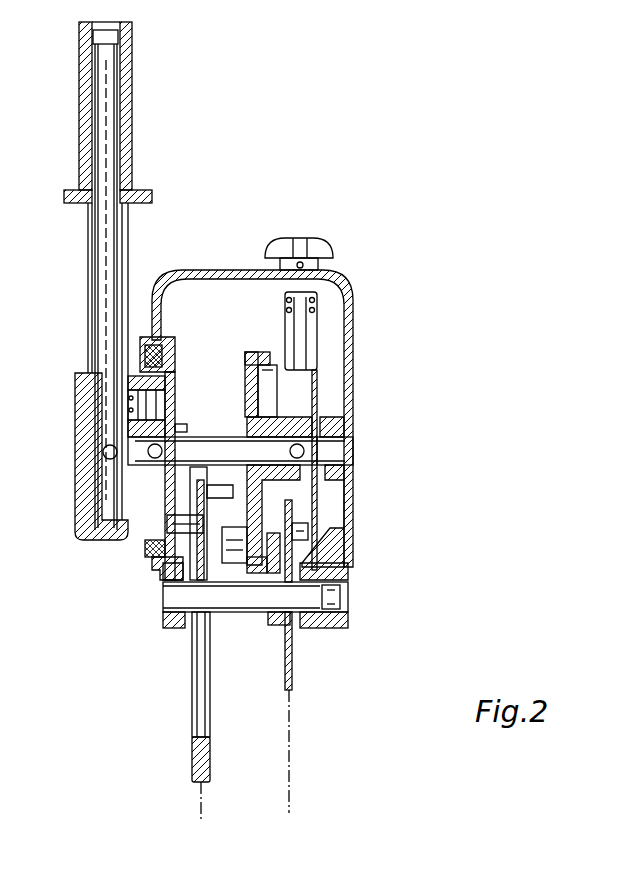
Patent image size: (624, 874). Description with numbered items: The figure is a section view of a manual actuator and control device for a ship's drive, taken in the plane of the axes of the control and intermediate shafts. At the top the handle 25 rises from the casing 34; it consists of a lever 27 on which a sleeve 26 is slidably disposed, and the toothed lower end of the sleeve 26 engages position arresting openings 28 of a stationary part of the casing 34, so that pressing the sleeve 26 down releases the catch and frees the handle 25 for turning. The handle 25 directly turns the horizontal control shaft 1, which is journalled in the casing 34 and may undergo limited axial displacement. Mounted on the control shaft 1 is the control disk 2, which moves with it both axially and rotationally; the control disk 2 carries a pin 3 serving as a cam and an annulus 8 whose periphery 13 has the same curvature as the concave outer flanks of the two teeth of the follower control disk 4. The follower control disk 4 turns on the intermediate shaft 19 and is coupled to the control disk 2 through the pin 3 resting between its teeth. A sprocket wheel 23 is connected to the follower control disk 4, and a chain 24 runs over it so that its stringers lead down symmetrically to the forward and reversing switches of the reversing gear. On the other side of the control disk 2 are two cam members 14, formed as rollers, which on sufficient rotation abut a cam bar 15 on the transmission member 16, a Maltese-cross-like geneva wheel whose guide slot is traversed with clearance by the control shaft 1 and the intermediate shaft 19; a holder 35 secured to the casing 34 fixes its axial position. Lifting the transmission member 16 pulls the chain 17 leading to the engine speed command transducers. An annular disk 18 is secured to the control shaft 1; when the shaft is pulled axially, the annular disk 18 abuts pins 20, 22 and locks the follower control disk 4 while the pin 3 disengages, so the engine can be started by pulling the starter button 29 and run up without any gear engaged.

The control shaft 1 is at (338, 447).
The control disk 2 is at (243, 376).
The pin 3 is at (300, 568).
The follower control disk 4 is at (310, 626).
The annulus 8 is at (268, 366).
The periphery of annulus 13 is at (277, 358).
The cam members 14 is at (150, 548).
The cam bar 15 is at (168, 482).
The transmission member 16 is at (192, 690).
The chain 17 is at (199, 800).
The annular disk 18 is at (330, 494).
The intermediate shaft 19 is at (185, 598).
The pin 20 is at (310, 537).
The pin 22 is at (318, 530).
The sprocket wheel 23 is at (295, 676).
The chain 24 is at (291, 727).
The handle 25 is at (86, 276).
The sleeve 26 is at (95, 229).
The lever 27 is at (108, 323).
The position arresting openings 28 is at (88, 394).
The starter button 29 is at (330, 248).
The casing 34 is at (358, 290).
The holder 35 is at (168, 568).